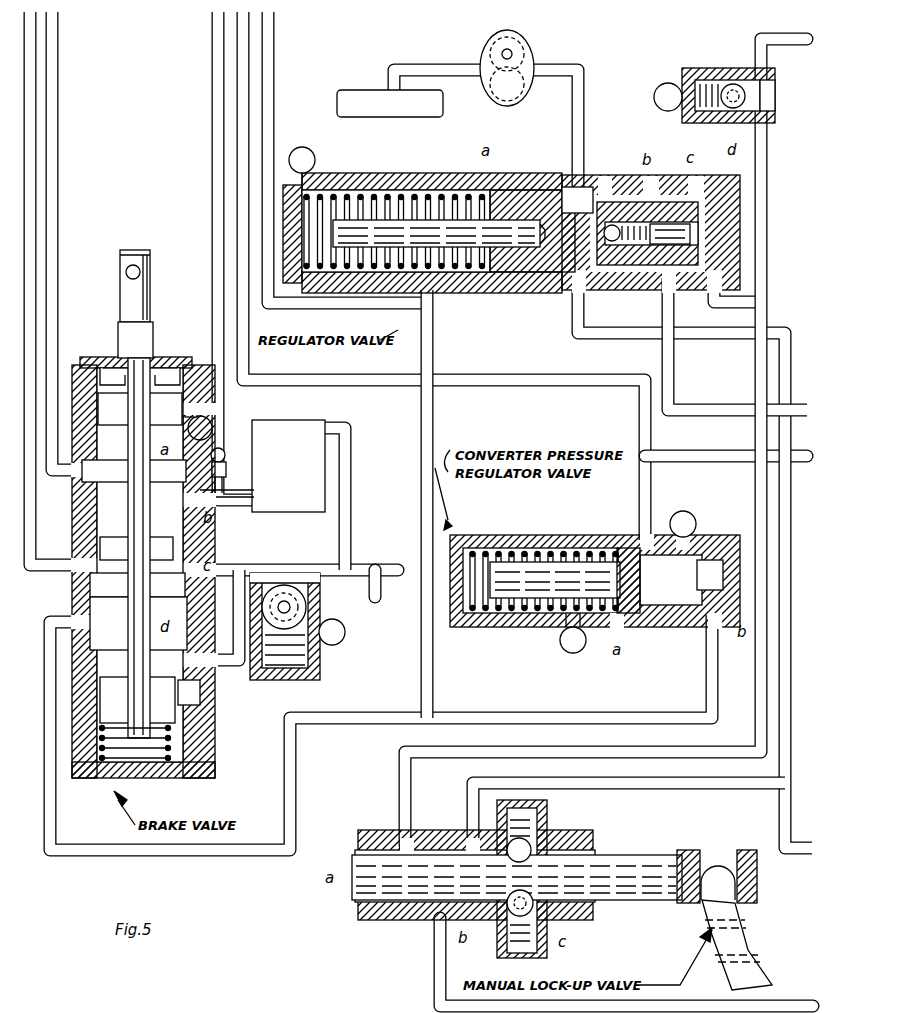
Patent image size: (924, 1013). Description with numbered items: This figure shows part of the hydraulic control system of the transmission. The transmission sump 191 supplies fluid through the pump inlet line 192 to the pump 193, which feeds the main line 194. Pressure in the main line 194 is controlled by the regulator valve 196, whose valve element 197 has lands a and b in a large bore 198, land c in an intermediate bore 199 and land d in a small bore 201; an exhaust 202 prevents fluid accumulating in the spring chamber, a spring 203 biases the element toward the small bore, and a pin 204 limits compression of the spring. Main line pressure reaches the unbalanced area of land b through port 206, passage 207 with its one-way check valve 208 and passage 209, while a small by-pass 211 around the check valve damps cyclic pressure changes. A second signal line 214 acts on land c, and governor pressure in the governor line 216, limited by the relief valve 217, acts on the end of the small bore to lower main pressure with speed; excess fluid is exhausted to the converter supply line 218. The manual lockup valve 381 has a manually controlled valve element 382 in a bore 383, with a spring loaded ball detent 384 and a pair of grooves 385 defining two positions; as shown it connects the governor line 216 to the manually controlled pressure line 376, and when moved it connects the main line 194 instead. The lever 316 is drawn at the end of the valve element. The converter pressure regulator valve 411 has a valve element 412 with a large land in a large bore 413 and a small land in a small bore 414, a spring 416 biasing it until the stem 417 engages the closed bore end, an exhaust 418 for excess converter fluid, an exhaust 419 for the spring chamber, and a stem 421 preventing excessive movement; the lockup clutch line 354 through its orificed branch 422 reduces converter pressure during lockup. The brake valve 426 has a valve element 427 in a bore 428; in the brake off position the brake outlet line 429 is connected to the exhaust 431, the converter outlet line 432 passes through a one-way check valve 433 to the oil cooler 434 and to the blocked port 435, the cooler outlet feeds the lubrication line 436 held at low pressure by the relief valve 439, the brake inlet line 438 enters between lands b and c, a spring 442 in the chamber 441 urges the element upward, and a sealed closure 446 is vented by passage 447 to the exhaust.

The transmission sump 191 is at (440, 97).
The pump inlet line 192 is at (440, 68).
The pump 193 is at (533, 52).
The main line 194 is at (580, 95).
The regulator valve 196 is at (403, 178).
The valve element 197 is at (430, 296).
The large bore 198 is at (554, 188).
The intermediate bore 199 is at (660, 280).
The small bore 201 is at (716, 292).
The exhaust 202 is at (310, 135).
The spring 203 is at (342, 188).
The pin 204 is at (513, 218).
The port 206 is at (578, 200).
The passage 207 is at (640, 200).
The one-way check valve 208 is at (588, 272).
The passage 209 is at (660, 222).
The by-pass 211 is at (650, 200).
The second signal line 214 is at (748, 405).
The governor line 216 is at (785, 36).
The relief valve 217 is at (733, 68).
The converter supply line 218 is at (275, 50).
The lock-up lever 316 is at (724, 920).
The lockup clutch line 354 is at (240, 72).
The manually controlled pressure line 376 is at (783, 1000).
The manual lockup valve 381 is at (402, 918).
The manually controlled valve element 382 is at (362, 898).
The bore 383 is at (580, 905).
The spring loaded ball detent 384 is at (530, 845).
The grooves 385 is at (508, 915).
The converter pressure regulator valve 411 is at (468, 535).
The valve element 412 is at (662, 615).
The large bore 413 is at (535, 547).
The small bore 414 is at (685, 555).
The spring 416 is at (473, 615).
The stem 417 is at (712, 575).
The exhaust 418 is at (690, 512).
The exhaust 419 is at (568, 653).
The stem 421 is at (496, 560).
The orificed branch 422 is at (640, 525).
The brake valve 426 is at (98, 355).
The valve element 427 is at (108, 527).
The bore 428 is at (175, 550).
The brake outlet line 429 is at (58, 135).
The exhaust 431 is at (208, 418).
The converter outlet line 432 is at (215, 35).
The one-way check valve 433 is at (225, 455).
The oil cooler 434 is at (285, 508).
The port 435 is at (170, 496).
The lubrication line 436 is at (392, 563).
The brake inlet line 438 is at (35, 55).
The relief valve 439 is at (305, 610).
The chamber 441 is at (192, 755).
The spring 442 is at (140, 755).
The sealed closure 446 is at (170, 365).
The passage 447 is at (178, 375).